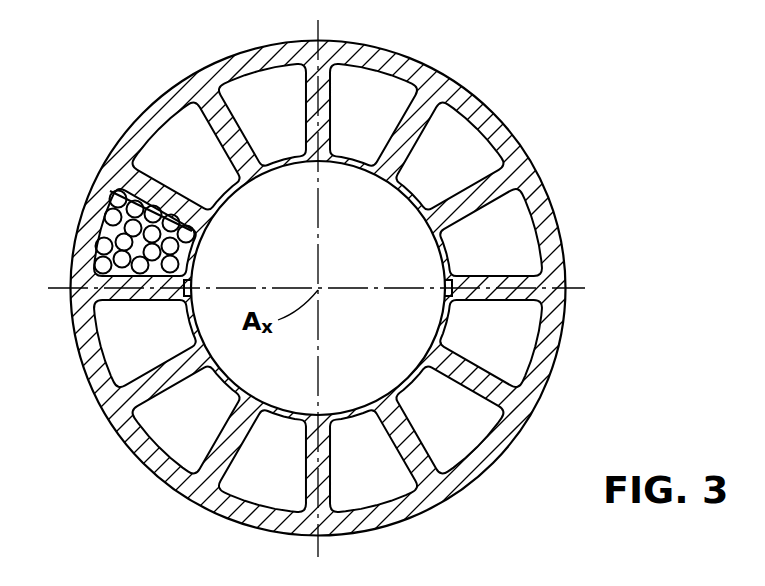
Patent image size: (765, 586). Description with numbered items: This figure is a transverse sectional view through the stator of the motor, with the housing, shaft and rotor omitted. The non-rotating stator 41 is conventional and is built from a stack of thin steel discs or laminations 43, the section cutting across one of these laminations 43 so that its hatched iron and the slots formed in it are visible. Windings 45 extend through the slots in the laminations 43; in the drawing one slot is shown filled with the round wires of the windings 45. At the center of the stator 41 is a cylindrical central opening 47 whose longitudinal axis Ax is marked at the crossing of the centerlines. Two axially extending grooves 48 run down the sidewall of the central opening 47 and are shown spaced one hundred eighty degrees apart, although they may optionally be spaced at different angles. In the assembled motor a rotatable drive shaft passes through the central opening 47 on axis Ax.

The stator 41 is at (338, 288).
The laminations 43 is at (565, 242).
The windings 45 is at (120, 199).
The central opening 47 is at (430, 216).
The grooves 48 is at (443, 290).